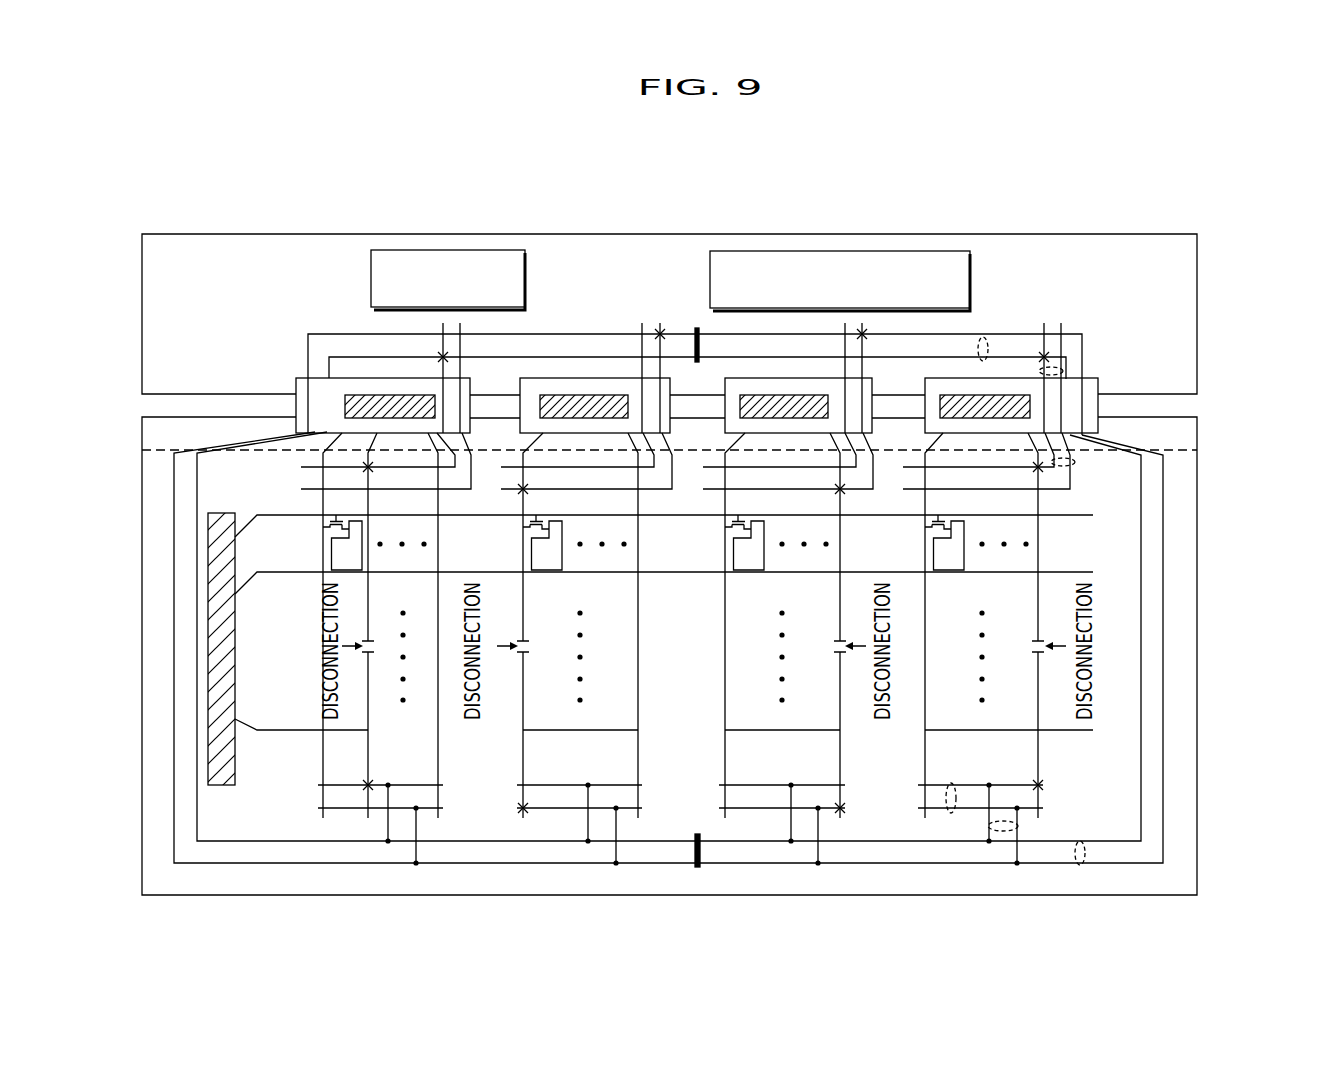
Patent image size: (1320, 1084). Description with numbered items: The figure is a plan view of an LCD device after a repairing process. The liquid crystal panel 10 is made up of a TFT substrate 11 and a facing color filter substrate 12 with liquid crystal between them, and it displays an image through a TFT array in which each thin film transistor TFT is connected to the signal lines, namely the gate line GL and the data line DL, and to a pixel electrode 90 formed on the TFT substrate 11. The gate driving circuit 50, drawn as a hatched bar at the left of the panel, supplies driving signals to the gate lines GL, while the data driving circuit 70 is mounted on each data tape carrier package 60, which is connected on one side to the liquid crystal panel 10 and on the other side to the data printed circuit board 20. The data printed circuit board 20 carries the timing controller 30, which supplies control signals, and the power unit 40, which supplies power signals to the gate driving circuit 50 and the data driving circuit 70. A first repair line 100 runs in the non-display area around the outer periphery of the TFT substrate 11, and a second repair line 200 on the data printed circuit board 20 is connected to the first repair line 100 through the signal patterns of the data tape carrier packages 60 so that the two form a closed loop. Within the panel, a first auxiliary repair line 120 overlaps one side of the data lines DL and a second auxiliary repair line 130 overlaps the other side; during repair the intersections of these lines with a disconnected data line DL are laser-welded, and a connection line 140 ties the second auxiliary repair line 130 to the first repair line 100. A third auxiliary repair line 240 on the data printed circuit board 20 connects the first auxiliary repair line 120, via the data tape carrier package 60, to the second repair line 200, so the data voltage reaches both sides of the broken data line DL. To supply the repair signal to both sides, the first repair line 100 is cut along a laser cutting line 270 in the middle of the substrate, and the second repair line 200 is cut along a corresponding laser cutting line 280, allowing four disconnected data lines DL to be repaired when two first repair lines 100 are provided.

The liquid crystal panel 10 is at (1260, 428).
The TFT substrate 11 is at (1197, 437).
The color filter substrate 12 is at (1197, 497).
The data printed circuit board 20 is at (1197, 285).
The timing controller 30 is at (837, 251).
The power unit 40 is at (446, 250).
The gate driving circuit 50 is at (208, 648).
The data tape carrier package 60 is at (296, 400).
The data driving circuit 70 is at (349, 393).
The pixel electrode 90 is at (331, 557).
The first repair line 100 is at (1080, 865).
The first auxiliary repair line 120 is at (1075, 462).
The second auxiliary repair line 130 is at (951, 813).
The connection line 140 is at (1000, 832).
The second repair line 200 is at (983, 337).
The third auxiliary repair line 240 is at (1063, 371).
The laser cutting line 270 is at (698, 868).
The laser cutting line 280 is at (697, 328).
The thin film transistor TFT is at (318, 526).
The data line DL is at (1039, 700).
The gate line GL is at (1072, 732).